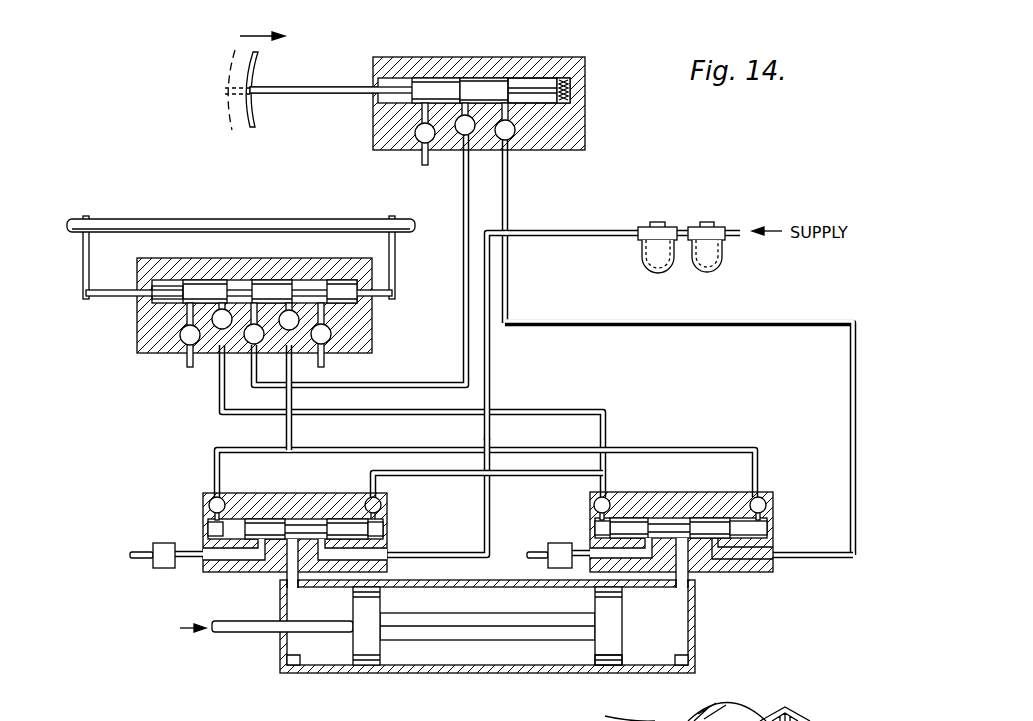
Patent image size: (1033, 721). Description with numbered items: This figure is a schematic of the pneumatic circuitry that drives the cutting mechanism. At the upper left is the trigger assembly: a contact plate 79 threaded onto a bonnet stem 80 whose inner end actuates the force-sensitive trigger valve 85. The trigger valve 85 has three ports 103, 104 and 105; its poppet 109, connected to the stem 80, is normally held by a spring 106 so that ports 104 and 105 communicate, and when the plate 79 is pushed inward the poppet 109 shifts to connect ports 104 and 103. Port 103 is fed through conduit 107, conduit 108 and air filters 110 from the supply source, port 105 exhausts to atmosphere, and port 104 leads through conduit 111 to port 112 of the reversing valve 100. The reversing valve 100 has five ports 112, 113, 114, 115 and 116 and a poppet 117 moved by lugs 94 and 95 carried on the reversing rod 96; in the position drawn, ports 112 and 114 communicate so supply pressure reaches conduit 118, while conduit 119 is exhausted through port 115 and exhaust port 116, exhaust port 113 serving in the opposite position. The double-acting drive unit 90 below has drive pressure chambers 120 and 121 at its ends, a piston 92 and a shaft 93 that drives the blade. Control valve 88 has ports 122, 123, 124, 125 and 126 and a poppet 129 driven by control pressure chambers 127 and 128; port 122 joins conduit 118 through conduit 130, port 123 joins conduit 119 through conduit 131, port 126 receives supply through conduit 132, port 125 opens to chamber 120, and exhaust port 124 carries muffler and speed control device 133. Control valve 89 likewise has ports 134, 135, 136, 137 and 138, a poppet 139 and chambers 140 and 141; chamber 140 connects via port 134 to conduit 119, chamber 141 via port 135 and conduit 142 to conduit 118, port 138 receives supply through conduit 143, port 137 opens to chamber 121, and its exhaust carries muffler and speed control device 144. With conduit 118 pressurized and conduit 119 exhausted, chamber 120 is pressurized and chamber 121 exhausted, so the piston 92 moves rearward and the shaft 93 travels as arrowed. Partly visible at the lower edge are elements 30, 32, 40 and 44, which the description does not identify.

The frame 30 is at (620, 718).
The cam 32 is at (728, 712).
The roller 40 is at (713, 716).
The lever 44 is at (815, 720).
The contact plate 79 is at (258, 120).
The bonnet stem 80 is at (343, 87).
The trigger valve 85 is at (538, 57).
The control valve 88 is at (208, 493).
The control valve 89 is at (742, 492).
The piston-and-cylinder drive unit 90 is at (457, 676).
The piston 92 is at (614, 668).
The shaft 93 is at (247, 634).
The lug 94 is at (396, 268).
The lug 95 is at (88, 262).
The reversing rod 96 is at (190, 218).
The reversing valve 100 is at (137, 350).
The port 103 is at (512, 135).
The port 104 is at (463, 128).
The port 105 is at (420, 135).
The spring 106 is at (575, 88).
The conduit 107 is at (510, 205).
The conduit 108 is at (618, 237).
The poppet 109 is at (548, 80).
The air filters 110 is at (694, 270).
The conduit 111 is at (466, 322).
The port 112 is at (250, 348).
The exhaust port 113 is at (332, 336).
The port 114 is at (292, 340).
The port 115 is at (219, 332).
The exhaust port 116 is at (186, 347).
The poppet 117 is at (156, 291).
The conduit 118 is at (293, 433).
The conduit 119 is at (388, 420).
The drive pressure chamber 120 is at (322, 667).
The drive pressure chamber 121 is at (690, 632).
The port 122 is at (210, 505).
The port 123 is at (369, 498).
The exhaust port 124 is at (215, 556).
The port 125 is at (292, 562).
The port 126 is at (390, 557).
The control pressure chamber 127 is at (210, 528).
The control pressure chamber 128 is at (385, 528).
The poppet 129 is at (270, 530).
The conduit 130 is at (245, 448).
The conduit 131 is at (480, 472).
The conduit 132 is at (492, 368).
The muffler and speed control device 133 is at (155, 548).
The port 134 is at (598, 505).
The port 135 is at (766, 494).
The port 136 is at (597, 553).
The port 137 is at (684, 574).
The port 138 is at (770, 556).
The poppet 139 is at (630, 518).
The control pressure chamber 140 is at (598, 528).
The control pressure chamber 141 is at (772, 528).
The conduit 142 is at (688, 452).
The conduit 143 is at (722, 330).
The muffler and speed control device 144 is at (548, 560).